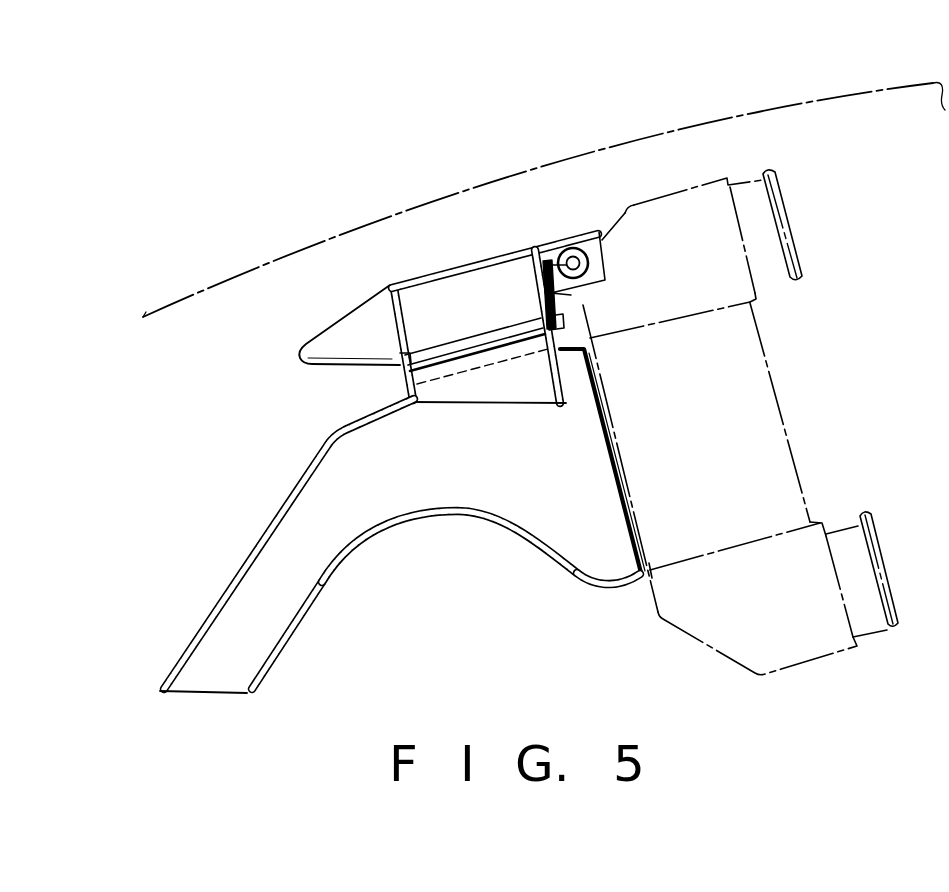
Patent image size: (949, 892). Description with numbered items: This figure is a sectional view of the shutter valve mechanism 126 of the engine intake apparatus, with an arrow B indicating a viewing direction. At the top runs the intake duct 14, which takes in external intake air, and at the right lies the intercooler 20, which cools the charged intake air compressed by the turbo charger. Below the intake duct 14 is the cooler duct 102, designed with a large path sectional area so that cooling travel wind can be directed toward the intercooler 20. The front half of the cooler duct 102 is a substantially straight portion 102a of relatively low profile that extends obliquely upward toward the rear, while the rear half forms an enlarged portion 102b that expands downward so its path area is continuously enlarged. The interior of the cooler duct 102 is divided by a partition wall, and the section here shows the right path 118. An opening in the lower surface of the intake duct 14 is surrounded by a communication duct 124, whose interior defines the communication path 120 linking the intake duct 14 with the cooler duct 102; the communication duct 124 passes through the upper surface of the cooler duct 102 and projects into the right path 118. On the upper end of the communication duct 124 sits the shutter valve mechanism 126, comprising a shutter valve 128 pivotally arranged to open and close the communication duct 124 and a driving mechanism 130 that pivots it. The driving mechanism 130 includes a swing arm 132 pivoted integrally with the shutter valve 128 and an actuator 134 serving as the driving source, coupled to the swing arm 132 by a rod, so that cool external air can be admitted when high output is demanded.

The intake duct 14 is at (407, 253).
The intercooler 20 is at (810, 235).
The cooler duct 102 is at (442, 535).
The substantially straight portion 102a is at (300, 612).
The enlarged portion 102b is at (540, 548).
The right path 118 is at (325, 483).
The communication path 120 is at (512, 390).
The communication duct 124 is at (577, 384).
The shutter valve mechanism 126 is at (498, 292).
The shutter valve 128 is at (450, 370).
The driving mechanism 130 is at (610, 213).
The swing arm 132 is at (578, 298).
The actuator 134 is at (603, 238).
The view direction arrow B is at (624, 285).